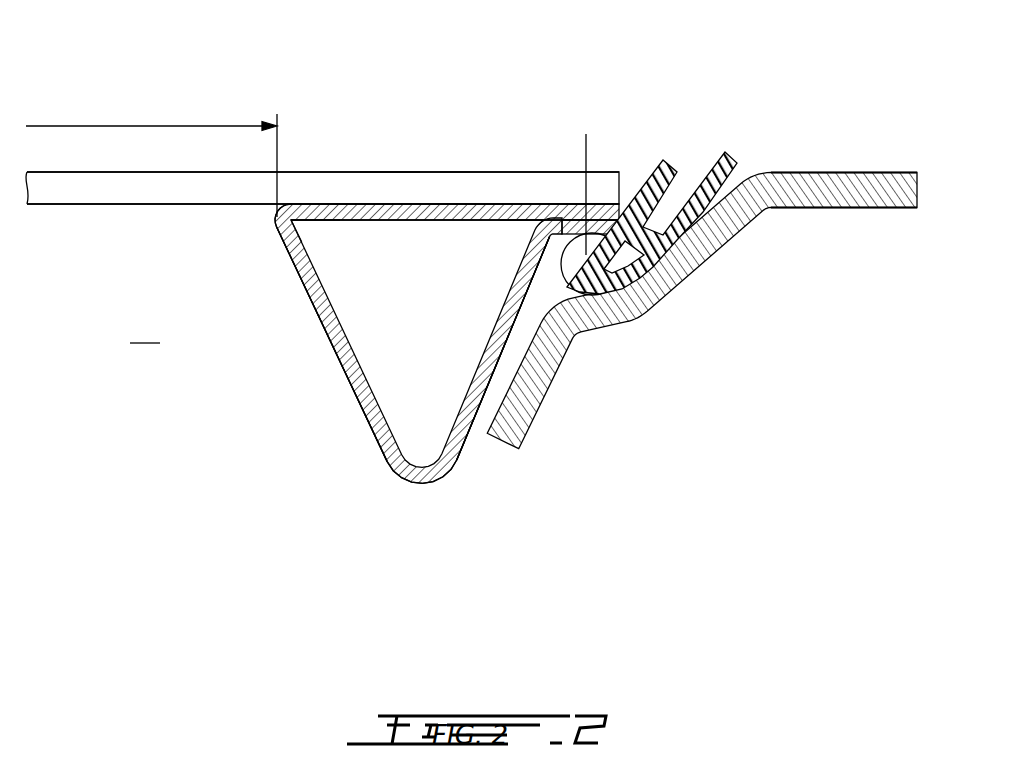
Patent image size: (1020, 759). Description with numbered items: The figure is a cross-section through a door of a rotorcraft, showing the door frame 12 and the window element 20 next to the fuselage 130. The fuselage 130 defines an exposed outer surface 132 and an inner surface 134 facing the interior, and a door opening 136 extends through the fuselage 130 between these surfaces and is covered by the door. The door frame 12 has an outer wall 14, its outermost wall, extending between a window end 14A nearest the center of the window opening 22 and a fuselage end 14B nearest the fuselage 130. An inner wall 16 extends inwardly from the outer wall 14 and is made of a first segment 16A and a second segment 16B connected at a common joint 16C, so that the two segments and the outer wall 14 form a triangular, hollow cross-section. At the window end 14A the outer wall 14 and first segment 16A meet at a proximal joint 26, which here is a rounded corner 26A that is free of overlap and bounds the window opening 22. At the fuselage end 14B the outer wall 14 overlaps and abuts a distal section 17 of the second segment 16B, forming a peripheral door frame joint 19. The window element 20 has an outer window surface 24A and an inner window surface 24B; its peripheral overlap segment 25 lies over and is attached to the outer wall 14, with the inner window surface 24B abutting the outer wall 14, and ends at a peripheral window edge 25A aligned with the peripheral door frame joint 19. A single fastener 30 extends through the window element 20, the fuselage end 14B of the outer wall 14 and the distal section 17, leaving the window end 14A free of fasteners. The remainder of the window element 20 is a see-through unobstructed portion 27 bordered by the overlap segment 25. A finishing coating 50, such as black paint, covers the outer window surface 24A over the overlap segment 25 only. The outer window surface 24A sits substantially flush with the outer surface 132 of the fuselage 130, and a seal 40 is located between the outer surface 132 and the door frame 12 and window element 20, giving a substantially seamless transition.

The door frame 12 is at (317, 407).
The outer wall 14 is at (427, 221).
The window end 14A is at (318, 240).
The fuselage end 14B is at (520, 243).
The inner wall 16 is at (375, 492).
The first segment 16A is at (340, 345).
The second segment 16B is at (487, 367).
The common joint 16C is at (414, 486).
The distal section 17 is at (590, 298).
The peripheral door frame joint 19 is at (607, 190).
The window element 20 is at (106, 222).
The window opening 22 is at (147, 326).
The outer window surface 24A is at (52, 172).
The inner window surface 24B is at (50, 206).
The overlap segment 25 is at (389, 158).
The peripheral window edge 25A is at (635, 178).
The proximal joint 26 is at (277, 233).
The corner 26A is at (277, 215).
The unobstructed portion 27 is at (151, 156).
The fastener 30 is at (586, 143).
The seal 40 is at (697, 268).
The finishing coating 50 is at (455, 172).
The fuselage 130 is at (840, 192).
The outer surface 132 is at (870, 172).
The inner surface 134 is at (900, 208).
The door opening 136 is at (475, 455).